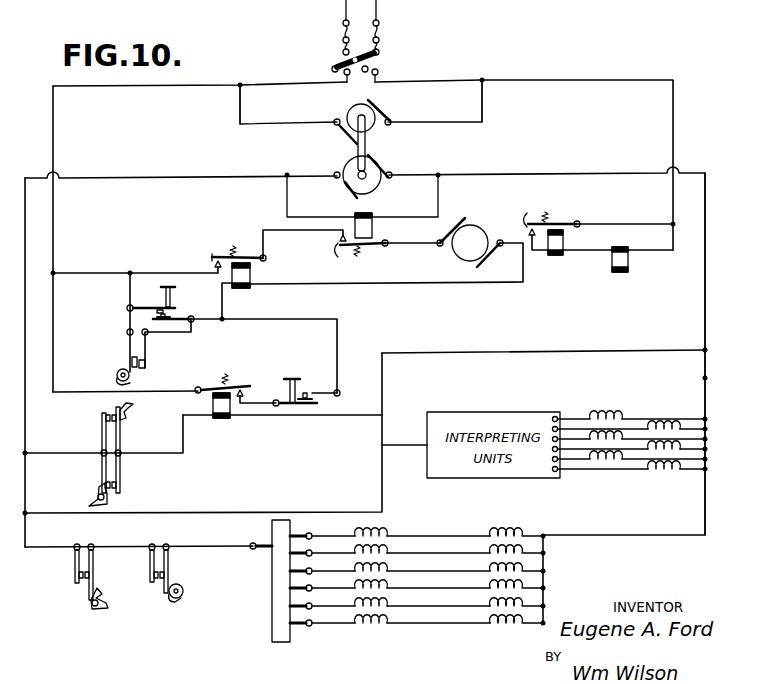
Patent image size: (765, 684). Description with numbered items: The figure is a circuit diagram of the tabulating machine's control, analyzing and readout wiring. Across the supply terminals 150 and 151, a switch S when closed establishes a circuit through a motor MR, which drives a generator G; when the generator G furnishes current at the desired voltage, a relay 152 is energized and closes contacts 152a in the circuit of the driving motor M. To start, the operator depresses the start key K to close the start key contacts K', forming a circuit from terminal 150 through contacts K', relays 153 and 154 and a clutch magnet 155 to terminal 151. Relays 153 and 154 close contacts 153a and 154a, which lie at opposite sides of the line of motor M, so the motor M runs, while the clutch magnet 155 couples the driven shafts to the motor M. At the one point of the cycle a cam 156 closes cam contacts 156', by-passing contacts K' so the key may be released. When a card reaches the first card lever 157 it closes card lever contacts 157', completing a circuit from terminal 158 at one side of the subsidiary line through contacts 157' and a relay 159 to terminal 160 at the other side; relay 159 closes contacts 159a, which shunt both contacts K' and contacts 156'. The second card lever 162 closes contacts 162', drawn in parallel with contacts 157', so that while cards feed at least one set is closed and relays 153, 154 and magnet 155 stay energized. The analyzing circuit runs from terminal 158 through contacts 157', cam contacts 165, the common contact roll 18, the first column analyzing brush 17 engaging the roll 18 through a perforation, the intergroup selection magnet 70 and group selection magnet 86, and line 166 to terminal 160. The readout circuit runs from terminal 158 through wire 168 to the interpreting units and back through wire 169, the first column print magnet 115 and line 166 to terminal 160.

The switch S is at (358, 78).
The motor MR is at (372, 120).
The generator G is at (370, 172).
The driving motor M is at (470, 242).
The start key K is at (162, 296).
The start key contacts K' is at (180, 309).
The terminal 150 is at (239, 86).
The terminal 151 is at (485, 83).
The relay 152 is at (372, 224).
The contacts 152a is at (334, 248).
The relay 153 is at (251, 278).
The contacts 153a is at (215, 257).
The relay 154 is at (563, 239).
The contacts 154a is at (552, 214).
The clutch magnet 155 is at (630, 260).
The cam 156 is at (100, 375).
The cam contacts 156' is at (116, 348).
The first card lever 157 is at (143, 448).
The card lever contacts 157' is at (80, 453).
The terminal 158 is at (285, 178).
The relay 159 is at (216, 409).
The contacts 159a is at (258, 379).
The terminal 160 is at (441, 178).
The second card lever 162 is at (78, 494).
The card lever contacts 162' is at (143, 480).
The cam contacts 165 is at (168, 574).
The line 166 is at (705, 378).
The wire 168 is at (287, 515).
The wire 169 is at (572, 433).
The first column analyzing brush 17 is at (304, 541).
The common contact roll 18 is at (280, 533).
The intergroup selection magnet 70 is at (386, 553).
The group selection magnet 86 is at (516, 540).
The print magnet 115 is at (653, 472).